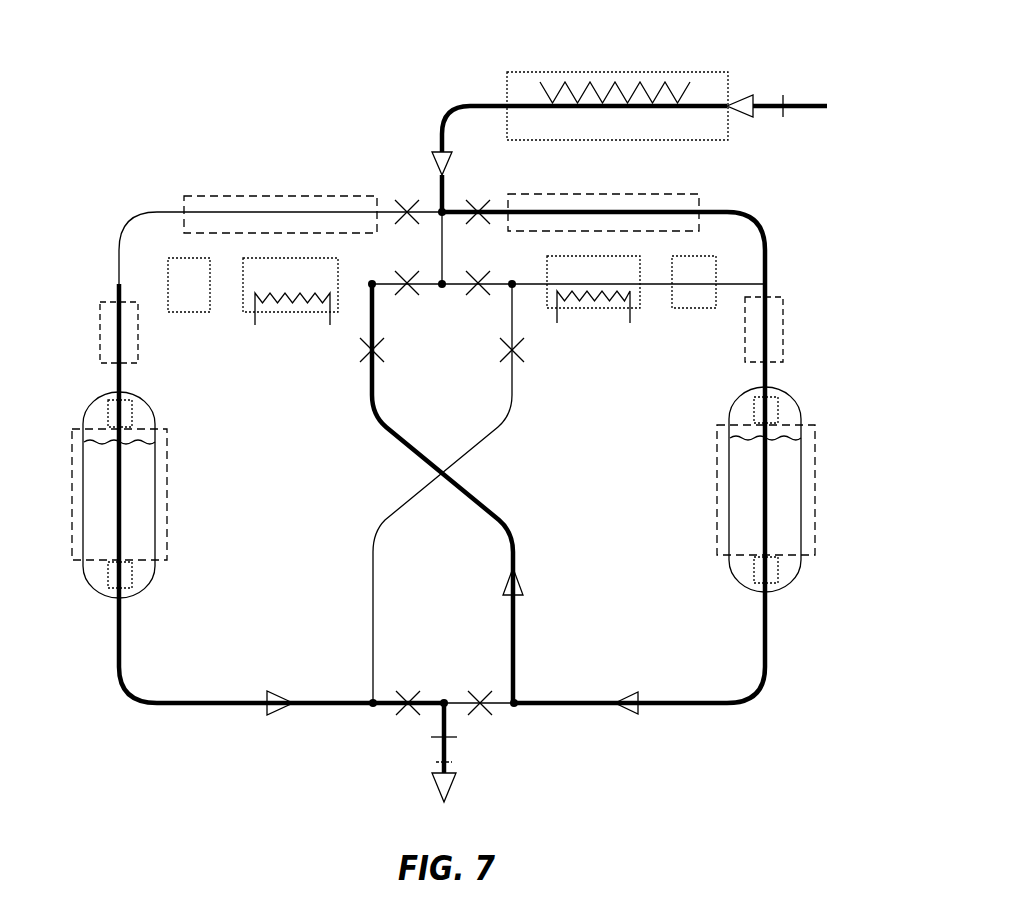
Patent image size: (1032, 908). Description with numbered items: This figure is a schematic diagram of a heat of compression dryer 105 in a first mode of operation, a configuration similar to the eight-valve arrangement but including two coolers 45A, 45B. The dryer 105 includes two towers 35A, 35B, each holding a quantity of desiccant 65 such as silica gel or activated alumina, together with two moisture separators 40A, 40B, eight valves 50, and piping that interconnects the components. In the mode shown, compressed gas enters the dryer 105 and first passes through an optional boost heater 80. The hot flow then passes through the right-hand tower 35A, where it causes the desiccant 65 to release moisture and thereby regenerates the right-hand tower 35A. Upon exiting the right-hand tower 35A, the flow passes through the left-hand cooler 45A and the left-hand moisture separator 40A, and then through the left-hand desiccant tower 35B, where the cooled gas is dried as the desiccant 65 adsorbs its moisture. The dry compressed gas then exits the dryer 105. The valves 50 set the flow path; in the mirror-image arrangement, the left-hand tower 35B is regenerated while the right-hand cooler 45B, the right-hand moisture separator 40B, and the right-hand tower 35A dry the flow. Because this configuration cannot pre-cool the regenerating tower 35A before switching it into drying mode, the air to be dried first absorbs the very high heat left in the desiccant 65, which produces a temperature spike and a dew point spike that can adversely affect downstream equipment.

The heat of compression dryer 105 is at (221, 83).
The boost heater 80 is at (612, 72).
The valve 50 is at (404, 205).
The left-hand moisture separator 40A is at (188, 312).
The left-hand cooler 45A is at (275, 325).
The right-hand moisture separator 40B is at (695, 308).
The right-hand cooler 45B is at (595, 323).
The right-hand tower 35A is at (795, 403).
The left-hand desiccant tower 35B is at (88, 408).
The desiccant 65 is at (95, 503).